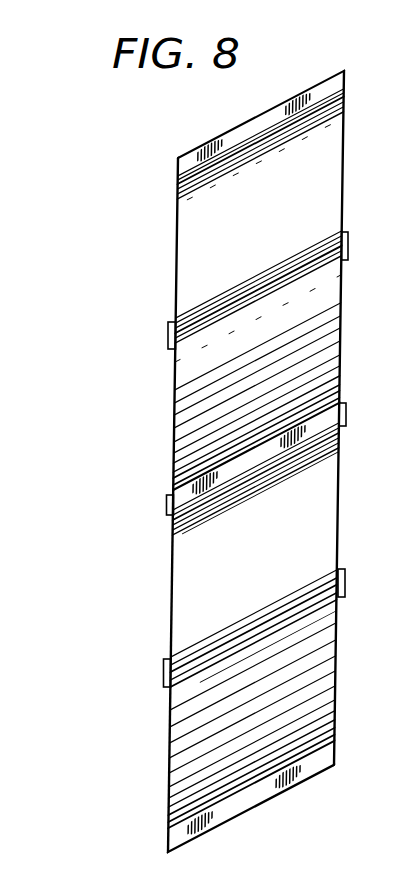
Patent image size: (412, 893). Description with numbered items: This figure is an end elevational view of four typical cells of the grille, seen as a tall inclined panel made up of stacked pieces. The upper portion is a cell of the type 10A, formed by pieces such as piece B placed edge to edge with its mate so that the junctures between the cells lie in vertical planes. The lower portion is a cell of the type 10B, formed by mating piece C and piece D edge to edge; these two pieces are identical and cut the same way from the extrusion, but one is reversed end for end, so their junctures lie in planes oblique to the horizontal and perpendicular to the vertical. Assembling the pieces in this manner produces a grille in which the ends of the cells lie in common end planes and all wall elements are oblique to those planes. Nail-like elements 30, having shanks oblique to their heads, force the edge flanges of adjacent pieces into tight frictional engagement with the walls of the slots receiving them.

The cell 10A is at (195, 142).
The cell 10B is at (167, 586).
The nail-like element 30 is at (168, 336).
The piece B is at (210, 255).
The piece C is at (210, 602).
The piece D is at (205, 713).